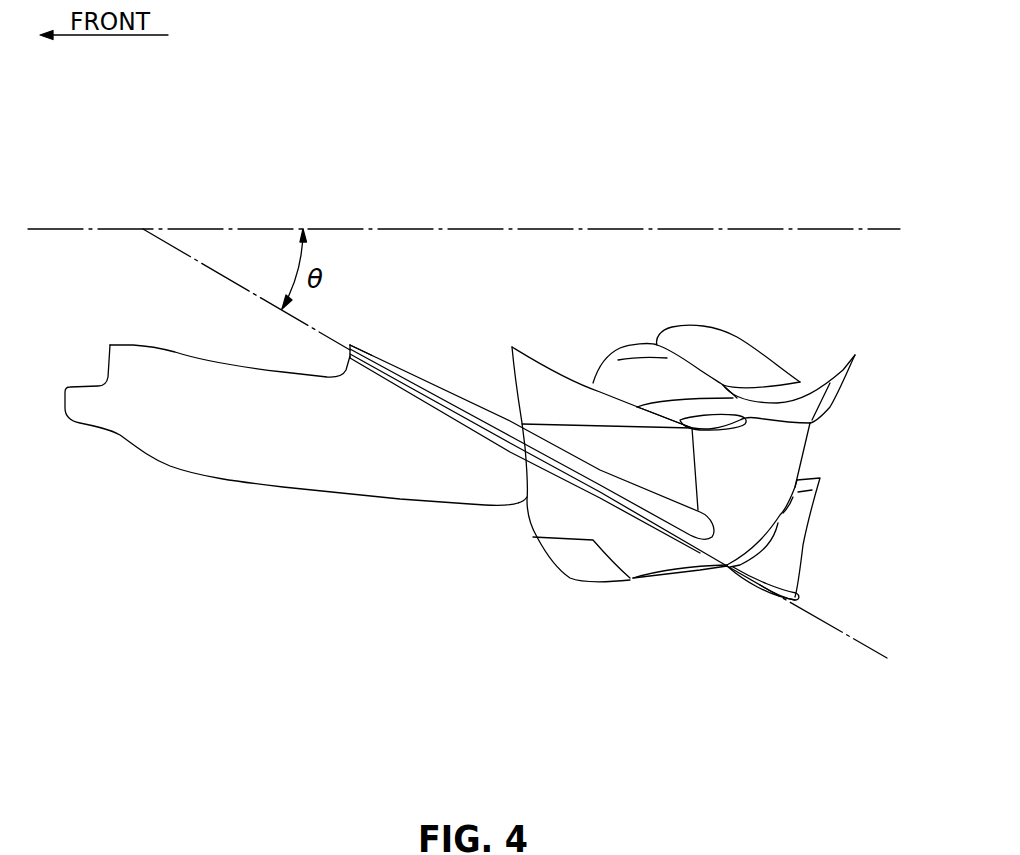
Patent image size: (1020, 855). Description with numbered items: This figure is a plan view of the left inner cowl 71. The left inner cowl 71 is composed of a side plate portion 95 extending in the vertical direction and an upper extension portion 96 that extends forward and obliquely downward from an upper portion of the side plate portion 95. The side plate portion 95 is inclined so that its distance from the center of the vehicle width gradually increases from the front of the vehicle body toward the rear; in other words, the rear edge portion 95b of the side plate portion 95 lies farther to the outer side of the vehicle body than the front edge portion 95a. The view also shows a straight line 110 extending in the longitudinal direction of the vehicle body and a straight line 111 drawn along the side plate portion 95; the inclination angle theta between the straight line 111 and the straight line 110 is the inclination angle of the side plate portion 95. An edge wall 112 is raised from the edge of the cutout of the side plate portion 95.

The left inner cowl 71 is at (565, 575).
The side plate portion 95 is at (752, 592).
The front edge portion 95a is at (350, 356).
The rear edge portion 95b is at (797, 602).
The upper extension portion 96 is at (213, 475).
The straight line 110 is at (555, 229).
The straight line 111 is at (192, 258).
The edge wall 112 is at (678, 462).